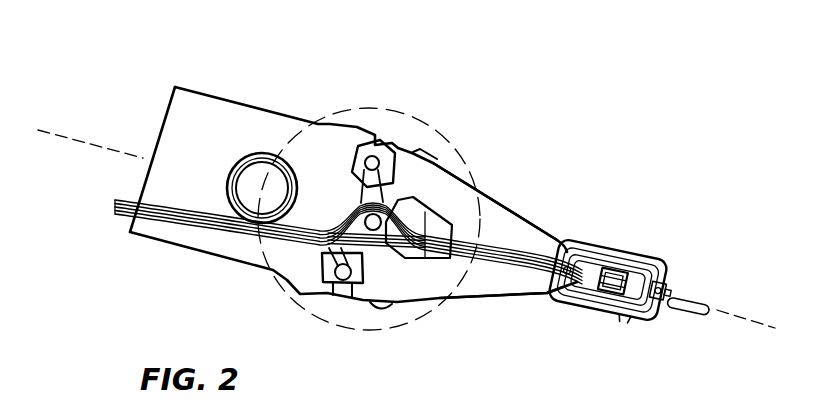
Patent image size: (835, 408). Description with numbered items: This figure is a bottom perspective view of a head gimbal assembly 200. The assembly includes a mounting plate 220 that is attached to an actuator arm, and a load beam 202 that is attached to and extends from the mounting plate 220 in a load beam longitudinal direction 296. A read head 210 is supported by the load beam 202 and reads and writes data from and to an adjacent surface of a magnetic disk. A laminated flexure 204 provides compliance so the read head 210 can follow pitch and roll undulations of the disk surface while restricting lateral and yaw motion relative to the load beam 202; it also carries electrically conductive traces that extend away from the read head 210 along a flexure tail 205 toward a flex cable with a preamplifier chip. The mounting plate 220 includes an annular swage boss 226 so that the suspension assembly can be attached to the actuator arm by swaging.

The head gimbal assembly 200 is at (548, 74).
The load beam 202 is at (508, 228).
The laminated flexure 204 is at (484, 265).
The flexure tail 205 is at (120, 216).
The read head 210 is at (628, 256).
The mounting plate 220 is at (408, 216).
The annular swage boss 226 is at (250, 172).
The load beam longitudinal direction 296 is at (748, 318).